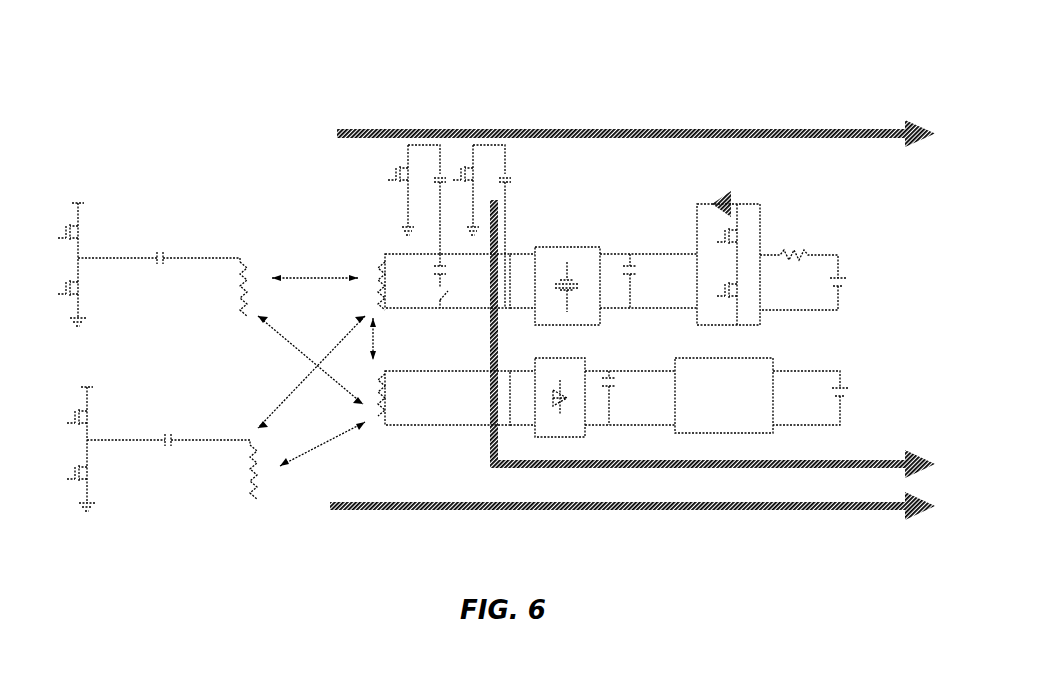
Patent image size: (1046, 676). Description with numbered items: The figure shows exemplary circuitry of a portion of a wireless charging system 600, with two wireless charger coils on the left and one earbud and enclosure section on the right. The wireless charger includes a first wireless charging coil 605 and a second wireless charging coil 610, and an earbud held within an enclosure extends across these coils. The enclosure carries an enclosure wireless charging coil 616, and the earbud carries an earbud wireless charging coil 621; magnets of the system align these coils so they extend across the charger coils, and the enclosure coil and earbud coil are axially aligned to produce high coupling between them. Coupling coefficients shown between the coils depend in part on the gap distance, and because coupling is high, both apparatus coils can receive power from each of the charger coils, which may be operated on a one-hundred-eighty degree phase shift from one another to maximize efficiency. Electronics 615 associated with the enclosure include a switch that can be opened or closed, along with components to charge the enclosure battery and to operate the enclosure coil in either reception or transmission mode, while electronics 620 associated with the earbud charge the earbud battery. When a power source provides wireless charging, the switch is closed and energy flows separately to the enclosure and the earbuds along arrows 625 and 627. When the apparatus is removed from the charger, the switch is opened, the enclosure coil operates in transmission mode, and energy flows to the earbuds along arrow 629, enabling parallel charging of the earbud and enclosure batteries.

The wireless charging system 600 is at (158, 85).
The first wireless charging coil 605 is at (247, 264).
The second wireless charging coil 610 is at (257, 497).
The enclosure wireless charging coil 616 is at (380, 268).
The earbud wireless charging coil 621 is at (380, 418).
The electronics associated with an enclosure 615 is at (840, 272).
The electronics associated with an earbud 620 is at (840, 382).
The arrow 625 is at (703, 130).
The arrow 629 is at (795, 201).
The arrow 627 is at (700, 509).